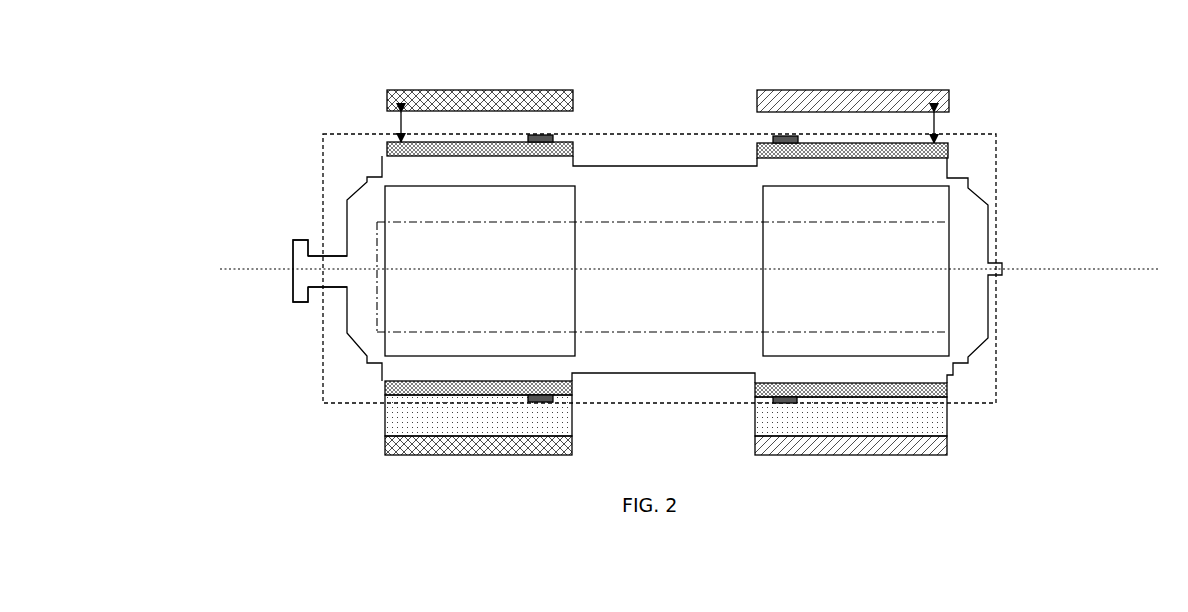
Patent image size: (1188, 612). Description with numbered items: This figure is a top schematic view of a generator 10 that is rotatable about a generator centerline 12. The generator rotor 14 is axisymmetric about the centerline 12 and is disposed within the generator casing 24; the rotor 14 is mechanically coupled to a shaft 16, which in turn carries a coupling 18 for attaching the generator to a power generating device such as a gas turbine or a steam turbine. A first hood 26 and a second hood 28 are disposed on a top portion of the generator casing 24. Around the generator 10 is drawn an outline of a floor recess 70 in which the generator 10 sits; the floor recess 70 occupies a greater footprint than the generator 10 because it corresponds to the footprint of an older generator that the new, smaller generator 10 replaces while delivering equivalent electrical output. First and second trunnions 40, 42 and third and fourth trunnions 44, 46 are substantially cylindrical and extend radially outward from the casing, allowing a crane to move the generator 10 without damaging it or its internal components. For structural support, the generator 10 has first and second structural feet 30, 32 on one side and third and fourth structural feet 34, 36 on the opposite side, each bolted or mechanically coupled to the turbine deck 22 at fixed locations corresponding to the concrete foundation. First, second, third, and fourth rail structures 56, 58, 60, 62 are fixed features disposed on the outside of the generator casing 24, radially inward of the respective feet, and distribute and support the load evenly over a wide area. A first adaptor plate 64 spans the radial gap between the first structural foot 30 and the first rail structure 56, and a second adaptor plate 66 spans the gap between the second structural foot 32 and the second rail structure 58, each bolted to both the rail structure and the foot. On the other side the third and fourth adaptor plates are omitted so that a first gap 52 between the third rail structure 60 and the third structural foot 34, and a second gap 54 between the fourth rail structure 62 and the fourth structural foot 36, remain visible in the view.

The generator 10 is at (262, 56).
The generator centerline 12 is at (1153, 270).
The generator rotor 14 is at (702, 222).
The shaft 16 is at (333, 255).
The coupling 18 is at (291, 260).
The turbine deck 22 is at (676, 106).
The generator casing 24 is at (678, 309).
The first hood 26 is at (507, 188).
The second hood 28 is at (896, 188).
The first structural foot 30 is at (427, 452).
The second structural foot 32 is at (905, 450).
The third structural foot 34 is at (526, 90).
The fourth structural foot 36 is at (878, 89).
The first trunnion 40 is at (557, 397).
The second trunnion 42 is at (773, 400).
The third trunnion 44 is at (553, 137).
The fourth trunnion 46 is at (773, 137).
The first gap 52 is at (398, 127).
The second gap 54 is at (938, 126).
The first rail structure 56 is at (385, 388).
The second rail structure 58 is at (755, 388).
The third rail structure 60 is at (387, 147).
The fourth rail structure 62 is at (948, 152).
The first adaptor plate 64 is at (385, 428).
The second adaptor plate 66 is at (948, 426).
The floor recess 70 is at (996, 200).